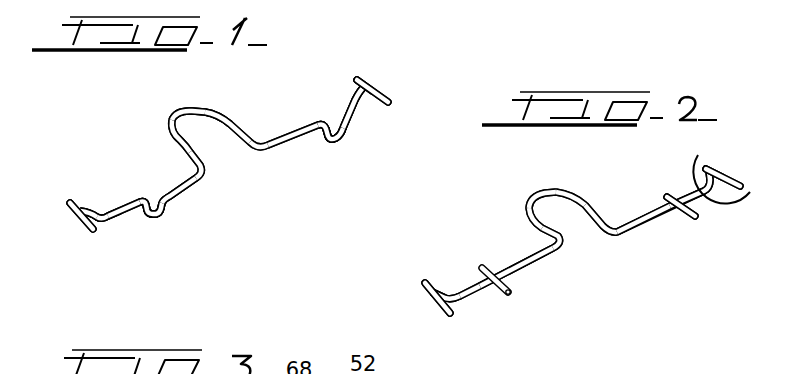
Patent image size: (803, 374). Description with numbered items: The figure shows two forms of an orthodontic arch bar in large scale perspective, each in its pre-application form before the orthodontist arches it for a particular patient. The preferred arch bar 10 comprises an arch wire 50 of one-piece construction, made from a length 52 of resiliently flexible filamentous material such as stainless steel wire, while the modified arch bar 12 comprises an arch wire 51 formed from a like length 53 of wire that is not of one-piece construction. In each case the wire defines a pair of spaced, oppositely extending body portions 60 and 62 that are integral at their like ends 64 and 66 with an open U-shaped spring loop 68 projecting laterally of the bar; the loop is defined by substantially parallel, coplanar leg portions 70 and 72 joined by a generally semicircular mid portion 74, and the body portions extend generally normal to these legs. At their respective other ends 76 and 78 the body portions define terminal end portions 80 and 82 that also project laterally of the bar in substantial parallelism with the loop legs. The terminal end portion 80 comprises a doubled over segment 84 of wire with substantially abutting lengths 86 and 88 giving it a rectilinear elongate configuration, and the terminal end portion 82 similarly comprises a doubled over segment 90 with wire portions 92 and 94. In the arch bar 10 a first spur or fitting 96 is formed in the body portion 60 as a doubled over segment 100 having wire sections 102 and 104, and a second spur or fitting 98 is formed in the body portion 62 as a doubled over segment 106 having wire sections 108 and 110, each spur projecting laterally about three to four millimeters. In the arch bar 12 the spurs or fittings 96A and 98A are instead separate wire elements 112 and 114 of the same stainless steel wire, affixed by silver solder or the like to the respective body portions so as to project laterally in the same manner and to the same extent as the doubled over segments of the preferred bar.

In FIG. 1, the arch bar 10 is at (409, 68).
In FIG. 2, the arch bar 12 is at (402, 283).
In FIG. 1, the arch wire 50 is at (193, 192).
In FIG. 2, the arch wire 51 is at (644, 224).
In FIG. 1, the wire length 52 is at (117, 207).
In FIG. 2, the wire length 53 is at (648, 210).
In FIG. 1, the body portion 60 is at (167, 192).
In FIG. 2, the body portion 60 is at (503, 265).
In FIG. 1, the body portion 62 is at (297, 128).
In FIG. 2, the body portion 62 is at (700, 160).
In FIG. 1, the like end 64 is at (206, 175).
In FIG. 2, the like end 64 is at (556, 256).
In FIG. 1, the like end 66 is at (268, 150).
In FIG. 2, the like end 66 is at (613, 236).
In FIG. 1, the open U-shaped spring loop 68 is at (212, 112).
In FIG. 2, the open U-shaped spring loop 68 is at (565, 192).
In FIG. 1, the leg portion 70 is at (172, 135).
In FIG. 2, the leg portion 70 is at (528, 225).
In FIG. 1, the leg portion 72 is at (243, 130).
In FIG. 2, the leg portion 72 is at (594, 212).
In FIG. 1, the semicircular mid portion 74 is at (195, 110).
In FIG. 1, the other end 76 is at (101, 224).
In FIG. 2, the other end 76 is at (463, 296).
In FIG. 1, the other end 78 is at (366, 106).
In FIG. 2, the other end 78 is at (742, 194).
In FIG. 1, the terminal end portion 80 is at (71, 231).
In FIG. 2, the terminal end portion 80 is at (432, 322).
In FIG. 1, the terminal end portion 82 is at (384, 78).
In FIG. 2, the terminal end portion 82 is at (738, 158).
In FIG. 1, the doubled over segment 84 is at (76, 200).
In FIG. 2, the doubled over segment 84 is at (425, 294).
In FIG. 1, the abutting length 86 is at (76, 198).
In FIG. 2, the abutting length 86 is at (436, 282).
In FIG. 1, the abutting length 88 is at (75, 217).
In FIG. 2, the abutting length 88 is at (430, 303).
In FIG. 1, the doubled over segment 90 is at (354, 78).
In FIG. 2, the doubled over segment 90 is at (723, 152).
In FIG. 1, the wire portion 92 is at (352, 95).
In FIG. 2, the wire portion 92 is at (731, 204).
In FIG. 1, the wire portion 94 is at (366, 78).
In FIG. 2, the wire portion 94 is at (735, 173).
In FIG. 1, the first spur or fitting 96 is at (163, 228).
In FIG. 2, the spur or fitting 96A is at (520, 310).
In FIG. 1, the second spur or fitting 98 is at (346, 155).
In FIG. 2, the spur or fitting 98A is at (698, 223).
In FIG. 1, the doubled over segment 100 is at (150, 218).
In FIG. 1, the wire section 102 is at (143, 214).
In FIG. 1, the wire section 104 is at (168, 214).
In FIG. 1, the doubled over wire segment 106 is at (338, 144).
In FIG. 1, the wire section 108 is at (327, 144).
In FIG. 1, the wire section 110 is at (348, 142).
In FIG. 2, the wire element 112 is at (497, 270).
In FIG. 2, the wire element 114 is at (669, 195).